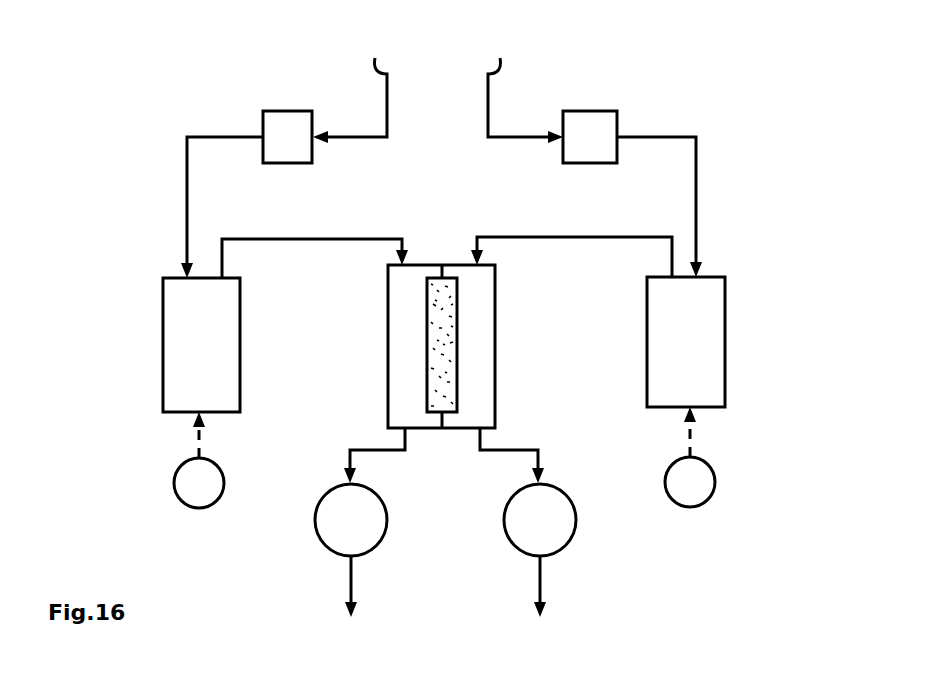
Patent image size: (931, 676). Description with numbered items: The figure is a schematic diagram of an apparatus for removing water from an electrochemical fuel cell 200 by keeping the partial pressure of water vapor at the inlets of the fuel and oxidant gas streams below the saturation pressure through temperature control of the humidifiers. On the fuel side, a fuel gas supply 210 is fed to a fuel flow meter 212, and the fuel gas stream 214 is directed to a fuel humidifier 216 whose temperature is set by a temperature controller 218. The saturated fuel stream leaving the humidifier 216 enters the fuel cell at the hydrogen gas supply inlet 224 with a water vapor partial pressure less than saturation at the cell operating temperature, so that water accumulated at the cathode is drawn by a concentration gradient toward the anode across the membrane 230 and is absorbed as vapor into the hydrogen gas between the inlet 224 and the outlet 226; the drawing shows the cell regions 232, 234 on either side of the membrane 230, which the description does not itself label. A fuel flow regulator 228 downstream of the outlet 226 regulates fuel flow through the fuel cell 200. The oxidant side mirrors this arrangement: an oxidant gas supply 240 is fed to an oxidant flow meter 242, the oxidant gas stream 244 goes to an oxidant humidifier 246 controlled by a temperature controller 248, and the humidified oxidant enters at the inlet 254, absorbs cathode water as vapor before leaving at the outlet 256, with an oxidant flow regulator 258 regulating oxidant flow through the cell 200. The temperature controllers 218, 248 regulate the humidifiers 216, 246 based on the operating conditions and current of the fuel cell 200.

The fuel cell 200 is at (368, 384).
The fuel gas supply 210 is at (358, 88).
The fuel flow meter 212 is at (285, 122).
The fuel gas stream 214 is at (185, 165).
The fuel humidifier 216 is at (172, 317).
The temperature controller 218 is at (187, 483).
The fuel cell hydrogen gas supply inlet 224 is at (404, 262).
The outlet 226 is at (400, 432).
The fuel flow regulator 228 is at (338, 542).
The membrane 230 is at (443, 268).
The first compartment 232 is at (402, 340).
The second compartment 234 is at (480, 375).
The oxidant gas supply 240 is at (514, 88).
The oxidant flow meter 242 is at (581, 120).
The oxidant gas stream 244 is at (699, 167).
The oxidant humidifier 246 is at (712, 366).
The temperature controller 248 is at (700, 490).
The oxidant gas supply inlet 254 is at (483, 256).
The outlet 256 is at (482, 432).
The oxidant flow regulator 258 is at (552, 537).